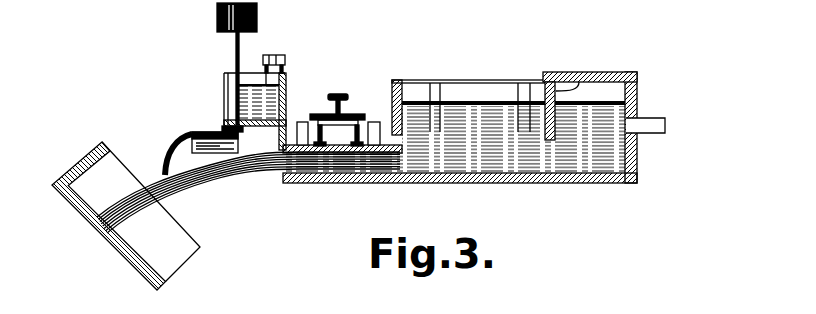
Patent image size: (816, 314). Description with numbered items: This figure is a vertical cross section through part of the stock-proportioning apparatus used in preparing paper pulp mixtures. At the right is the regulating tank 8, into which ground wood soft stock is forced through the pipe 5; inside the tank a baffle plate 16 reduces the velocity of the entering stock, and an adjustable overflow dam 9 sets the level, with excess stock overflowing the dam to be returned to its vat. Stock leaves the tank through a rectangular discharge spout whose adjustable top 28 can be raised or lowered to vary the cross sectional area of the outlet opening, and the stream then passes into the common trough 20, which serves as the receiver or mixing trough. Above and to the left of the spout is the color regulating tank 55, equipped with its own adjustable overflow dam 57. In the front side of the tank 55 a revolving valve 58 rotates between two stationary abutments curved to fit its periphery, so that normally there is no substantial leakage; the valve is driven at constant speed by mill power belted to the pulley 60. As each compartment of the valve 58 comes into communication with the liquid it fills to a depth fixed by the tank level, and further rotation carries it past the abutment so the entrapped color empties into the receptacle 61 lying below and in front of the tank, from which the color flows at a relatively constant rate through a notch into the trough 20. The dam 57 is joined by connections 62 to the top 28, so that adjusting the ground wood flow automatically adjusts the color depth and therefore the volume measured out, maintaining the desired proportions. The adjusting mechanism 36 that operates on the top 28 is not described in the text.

The pipe 5 is at (648, 119).
The regulating tank 8 is at (552, 183).
The adjustable overflow dam 9 is at (470, 102).
The baffle plate 16 is at (583, 71).
The common trough 20 is at (140, 273).
The adjustable top 28 is at (333, 153).
The clamp mechanism 36 is at (343, 97).
The regulating tank 55 is at (275, 88).
The adjustable overflow dam 57 is at (286, 71).
The revolving valve 58 is at (230, 87).
The pulley 60 is at (217, 22).
The receptacle 61 is at (215, 145).
The connections 62 is at (268, 54).